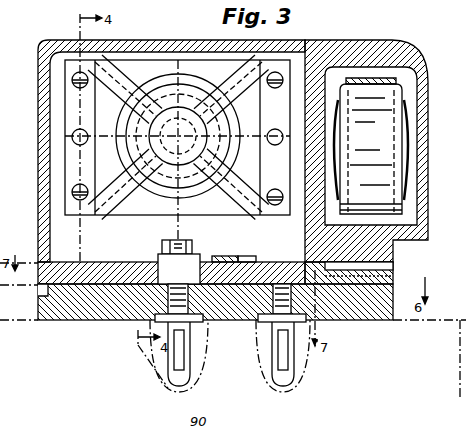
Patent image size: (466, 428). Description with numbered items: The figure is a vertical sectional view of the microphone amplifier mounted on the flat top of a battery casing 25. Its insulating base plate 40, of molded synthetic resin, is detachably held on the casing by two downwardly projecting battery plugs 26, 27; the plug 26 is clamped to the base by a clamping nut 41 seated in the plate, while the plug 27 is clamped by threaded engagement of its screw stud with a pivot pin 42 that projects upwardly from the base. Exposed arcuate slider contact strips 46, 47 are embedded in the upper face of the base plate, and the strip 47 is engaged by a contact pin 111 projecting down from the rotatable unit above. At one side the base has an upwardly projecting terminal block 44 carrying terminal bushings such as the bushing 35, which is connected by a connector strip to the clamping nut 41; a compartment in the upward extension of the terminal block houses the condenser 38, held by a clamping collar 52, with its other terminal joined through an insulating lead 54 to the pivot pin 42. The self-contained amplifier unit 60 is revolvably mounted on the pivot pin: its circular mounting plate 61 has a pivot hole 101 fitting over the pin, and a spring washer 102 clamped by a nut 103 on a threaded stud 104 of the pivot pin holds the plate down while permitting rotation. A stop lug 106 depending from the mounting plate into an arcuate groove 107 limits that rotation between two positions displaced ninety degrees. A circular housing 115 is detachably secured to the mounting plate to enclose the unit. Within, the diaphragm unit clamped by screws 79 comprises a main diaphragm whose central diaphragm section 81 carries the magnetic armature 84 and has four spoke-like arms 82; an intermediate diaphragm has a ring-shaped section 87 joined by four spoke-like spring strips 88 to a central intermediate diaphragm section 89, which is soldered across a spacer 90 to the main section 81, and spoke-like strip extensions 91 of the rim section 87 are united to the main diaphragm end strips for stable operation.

The microphone amplifier unit 60 is at (38, 58).
The housing 115 is at (46, 42).
The terminal block 44 is at (395, 250).
The condenser 38 is at (400, 103).
The clamping collar 52 is at (380, 78).
The insulating lead 54 is at (377, 155).
The spoke-like strip extensions 91 is at (65, 172).
The screws 79 is at (280, 72).
The spacer 90 is at (216, 94).
The armature 84 is at (126, 118).
The spoke-like arms 82 is at (234, 112).
The central diaphragm section 81 is at (242, 146).
The ring-shaped diaphragm section 87 is at (160, 100).
The spoke-like spring strips 88 is at (162, 100).
The mounting plate 61 is at (92, 262).
The base plate 40 is at (58, 320).
The stop lug 106 is at (44, 292).
The slider contact strip 46 is at (108, 320).
The terminal bushing 35 is at (395, 278).
The clamping nut 41 is at (324, 312).
The nut 103 is at (168, 238).
The threaded stud 104 is at (192, 244).
The pivot hole 101 is at (128, 262).
The pivot pin 42 is at (212, 302).
The battery plug 27 is at (188, 372).
The slider contact strip 47 is at (252, 302).
The battery plug 26 is at (292, 376).
The spring washer 102 is at (216, 256).
The contact pin 111 is at (248, 262).
The battery casing 25 is at (456, 320).
The arcuate groove 107 is at (456, 289).
The central intermediate diaphragm section 89 is at (172, 419).